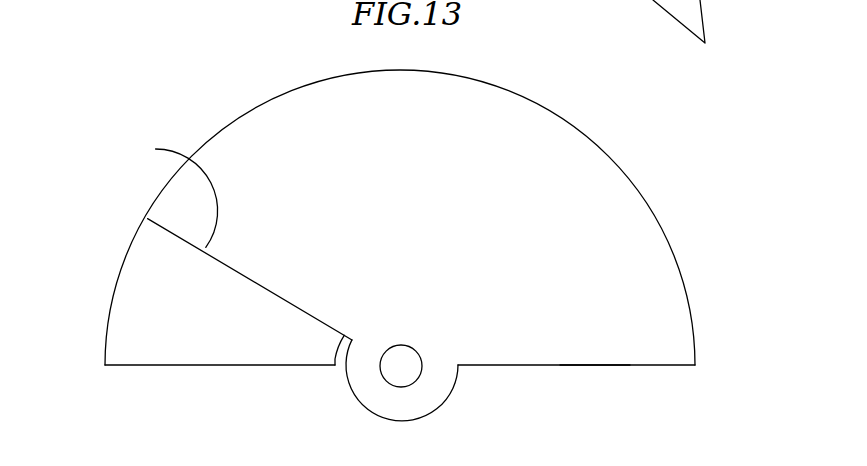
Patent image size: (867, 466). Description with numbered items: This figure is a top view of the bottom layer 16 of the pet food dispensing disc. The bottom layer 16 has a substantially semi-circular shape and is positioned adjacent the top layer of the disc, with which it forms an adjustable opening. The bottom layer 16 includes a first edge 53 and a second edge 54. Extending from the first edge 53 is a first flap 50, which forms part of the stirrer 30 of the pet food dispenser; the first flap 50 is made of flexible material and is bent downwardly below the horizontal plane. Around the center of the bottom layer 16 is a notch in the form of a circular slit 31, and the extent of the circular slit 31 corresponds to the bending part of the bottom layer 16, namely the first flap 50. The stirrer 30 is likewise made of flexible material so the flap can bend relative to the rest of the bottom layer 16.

The bottom layer 16 is at (622, 176).
The stirrer 30 is at (166, 386).
The circular slit 31 is at (337, 366).
The first flap 50 is at (147, 296).
The first edge 53 is at (156, 149).
The second edge 54 is at (592, 365).